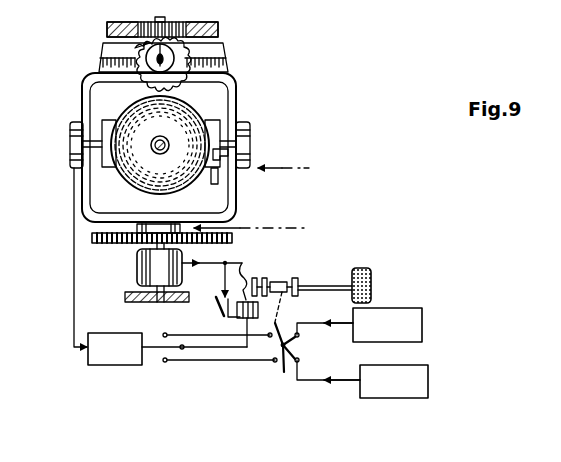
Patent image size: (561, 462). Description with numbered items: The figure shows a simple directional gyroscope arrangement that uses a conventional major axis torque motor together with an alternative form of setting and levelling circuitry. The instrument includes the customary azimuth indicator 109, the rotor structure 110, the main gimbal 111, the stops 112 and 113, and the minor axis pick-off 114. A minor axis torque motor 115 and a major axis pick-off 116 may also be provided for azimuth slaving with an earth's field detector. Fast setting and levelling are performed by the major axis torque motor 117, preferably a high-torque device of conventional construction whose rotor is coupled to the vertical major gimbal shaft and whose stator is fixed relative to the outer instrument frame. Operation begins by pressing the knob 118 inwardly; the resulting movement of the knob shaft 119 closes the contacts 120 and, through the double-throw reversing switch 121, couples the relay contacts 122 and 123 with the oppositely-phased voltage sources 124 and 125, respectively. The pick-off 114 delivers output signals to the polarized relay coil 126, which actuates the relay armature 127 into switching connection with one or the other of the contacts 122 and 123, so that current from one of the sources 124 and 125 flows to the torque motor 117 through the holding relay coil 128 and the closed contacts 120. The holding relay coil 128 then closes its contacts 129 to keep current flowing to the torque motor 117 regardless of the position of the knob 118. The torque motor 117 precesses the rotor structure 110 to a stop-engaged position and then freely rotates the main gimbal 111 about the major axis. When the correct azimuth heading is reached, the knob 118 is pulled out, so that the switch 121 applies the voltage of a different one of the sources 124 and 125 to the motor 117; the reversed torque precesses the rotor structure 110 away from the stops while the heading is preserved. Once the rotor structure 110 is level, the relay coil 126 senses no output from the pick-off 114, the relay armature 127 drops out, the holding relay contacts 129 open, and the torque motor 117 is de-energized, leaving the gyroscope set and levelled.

The azimuth indicator 109 is at (213, 52).
The rotor structure 110 is at (205, 102).
The main gimbal 111 is at (84, 101).
The stop 112 is at (208, 181).
The stop 113 is at (228, 158).
The minor axis pick-off 114 is at (72, 149).
The minor axis torque motor 115 is at (249, 144).
The major axis pick-off 116 is at (132, 233).
The major axis torque motor 117 is at (148, 272).
The knob 118 is at (371, 285).
The knob shaft 119 is at (310, 286).
The contacts 120 is at (242, 263).
The double-throw reversing switch 121 is at (276, 370).
The relay contact 122 is at (163, 333).
The relay contact 123 is at (166, 363).
The voltage source 124 is at (417, 308).
The voltage source 125 is at (424, 365).
The polarized relay coil 126 is at (103, 366).
The relay armature 127 is at (155, 349).
The holding relay coil 128 is at (232, 318).
The holding relay contacts 129 is at (222, 303).